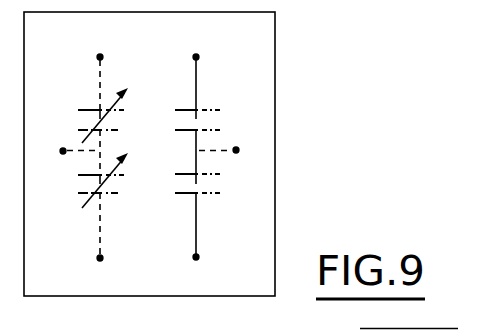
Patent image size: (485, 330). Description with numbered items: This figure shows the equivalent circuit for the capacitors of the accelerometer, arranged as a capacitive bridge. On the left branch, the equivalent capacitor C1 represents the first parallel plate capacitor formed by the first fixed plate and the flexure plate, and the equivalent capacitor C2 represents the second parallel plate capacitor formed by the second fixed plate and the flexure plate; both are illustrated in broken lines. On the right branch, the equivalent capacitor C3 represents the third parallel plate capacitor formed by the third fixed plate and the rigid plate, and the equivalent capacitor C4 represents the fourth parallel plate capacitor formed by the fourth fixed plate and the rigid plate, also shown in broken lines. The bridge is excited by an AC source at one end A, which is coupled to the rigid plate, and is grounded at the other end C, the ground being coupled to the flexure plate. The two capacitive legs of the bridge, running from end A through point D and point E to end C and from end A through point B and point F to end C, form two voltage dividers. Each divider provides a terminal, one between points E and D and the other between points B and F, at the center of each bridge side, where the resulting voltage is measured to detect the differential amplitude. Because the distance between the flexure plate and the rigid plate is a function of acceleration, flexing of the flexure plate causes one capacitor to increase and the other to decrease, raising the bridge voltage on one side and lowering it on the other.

The equivalent capacitor for the first parallel plate capacitor C1 is at (119, 115).
The equivalent capacitor for the second parallel plate capacitor C2 is at (119, 180).
The equivalent capacitor for the third parallel plate capacitor C3 is at (215, 121).
The equivalent capacitor for the fourth parallel plate capacitor C4 is at (215, 188).
The bridge end excited by AC source A is at (230, 151).
The bridge terminal point B is at (196, 272).
The grounded bridge end C is at (68, 151).
The bridge terminal point D is at (195, 42).
The bridge terminal point E is at (100, 42).
The bridge terminal point F is at (100, 272).